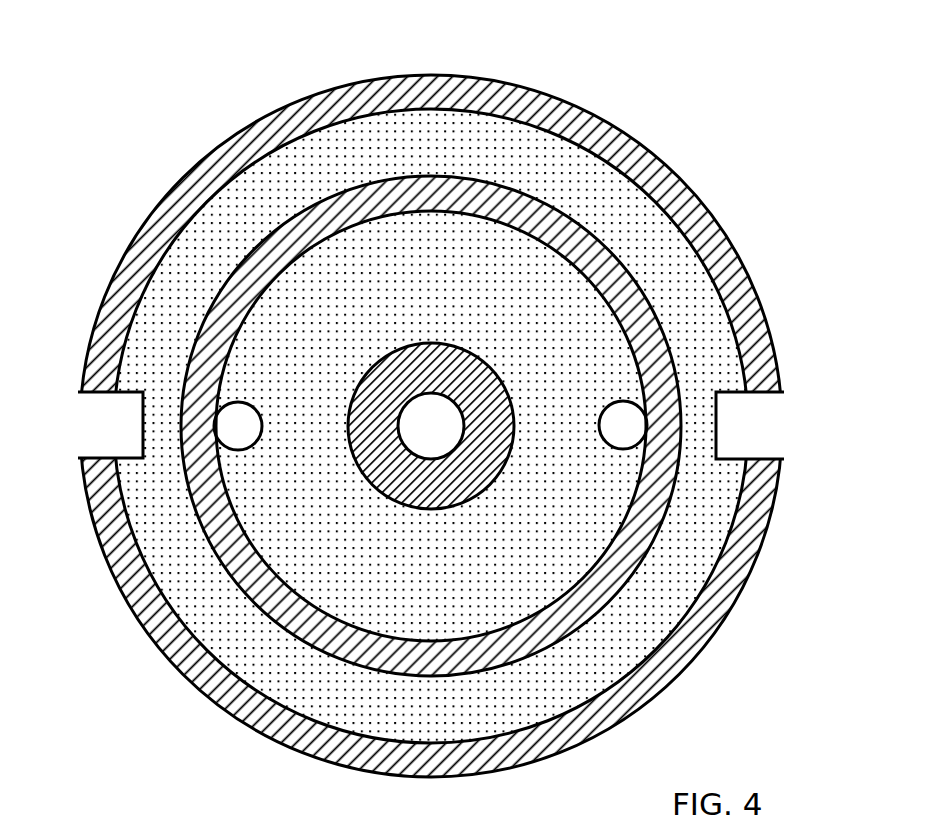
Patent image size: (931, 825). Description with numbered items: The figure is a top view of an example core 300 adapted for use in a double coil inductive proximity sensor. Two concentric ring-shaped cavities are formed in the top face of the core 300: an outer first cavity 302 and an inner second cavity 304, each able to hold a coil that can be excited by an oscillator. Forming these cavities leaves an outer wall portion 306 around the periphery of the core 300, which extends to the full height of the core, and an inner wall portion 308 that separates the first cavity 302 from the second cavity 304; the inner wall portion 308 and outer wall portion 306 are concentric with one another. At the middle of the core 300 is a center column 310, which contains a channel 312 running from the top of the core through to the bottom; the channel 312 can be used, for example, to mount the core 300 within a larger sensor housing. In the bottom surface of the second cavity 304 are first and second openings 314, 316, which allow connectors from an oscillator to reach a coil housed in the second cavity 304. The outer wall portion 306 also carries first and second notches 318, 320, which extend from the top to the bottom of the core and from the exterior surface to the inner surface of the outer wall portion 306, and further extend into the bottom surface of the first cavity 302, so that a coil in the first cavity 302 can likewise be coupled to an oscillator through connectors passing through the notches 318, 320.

The core 300 is at (732, 52).
The first cavity 302 is at (582, 188).
The second cavity 304 is at (513, 288).
The outer wall portion 306 is at (313, 120).
The inner wall portion 308 is at (313, 220).
The center column 310 is at (474, 366).
The channel 312 is at (428, 431).
The first opening 314 is at (619, 417).
The second opening 316 is at (242, 418).
The first notch 318 is at (95, 438).
The second notch 320 is at (783, 421).